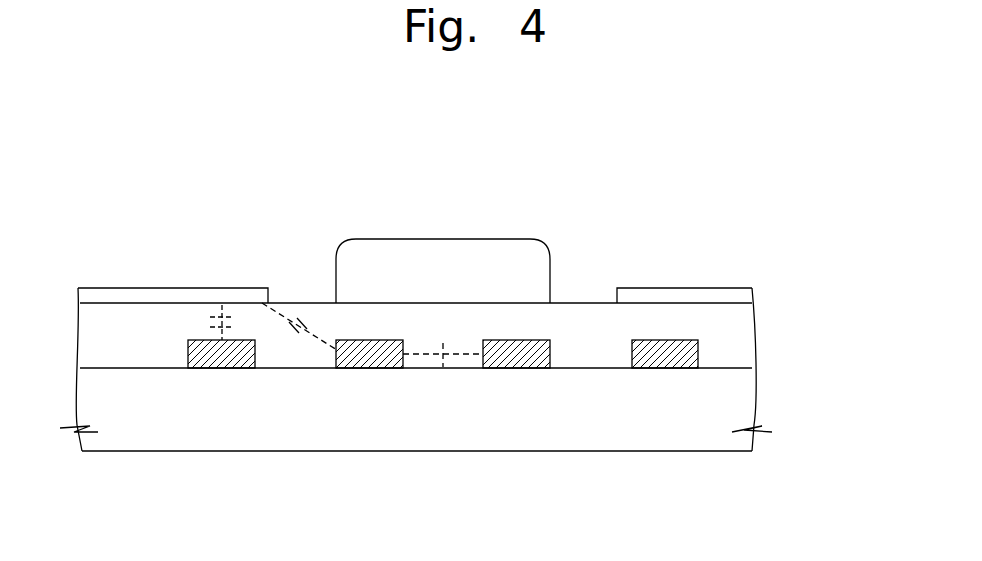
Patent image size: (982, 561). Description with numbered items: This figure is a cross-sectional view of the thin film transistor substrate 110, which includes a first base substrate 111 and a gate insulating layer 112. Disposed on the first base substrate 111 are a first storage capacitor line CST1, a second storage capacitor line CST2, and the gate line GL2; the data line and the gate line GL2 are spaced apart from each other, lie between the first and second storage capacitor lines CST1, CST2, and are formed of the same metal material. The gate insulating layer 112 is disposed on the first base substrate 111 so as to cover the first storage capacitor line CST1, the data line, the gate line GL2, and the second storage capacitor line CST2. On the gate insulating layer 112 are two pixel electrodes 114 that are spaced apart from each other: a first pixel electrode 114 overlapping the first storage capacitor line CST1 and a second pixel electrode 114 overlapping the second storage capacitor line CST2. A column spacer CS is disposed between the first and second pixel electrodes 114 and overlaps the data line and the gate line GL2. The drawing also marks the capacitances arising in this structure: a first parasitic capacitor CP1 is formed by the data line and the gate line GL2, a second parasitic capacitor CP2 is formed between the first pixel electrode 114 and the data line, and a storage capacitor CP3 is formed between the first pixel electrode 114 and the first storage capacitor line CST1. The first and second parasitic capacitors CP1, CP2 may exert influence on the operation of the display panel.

The thin film transistor substrate 110 is at (833, 328).
The first base substrate 111 is at (735, 402).
The gate insulating layer 112 is at (740, 340).
The pixel electrode 114 is at (123, 293).
The column spacer CS is at (443, 271).
The first storage capacitor line CST1 is at (223, 368).
The second storage capacitor line CST2 is at (667, 368).
The gate line GL2 is at (518, 368).
The first parasitic capacitor CP1 is at (443, 372).
The second parasitic capacitor CP2 is at (292, 312).
The storage capacitor CP3 is at (206, 320).